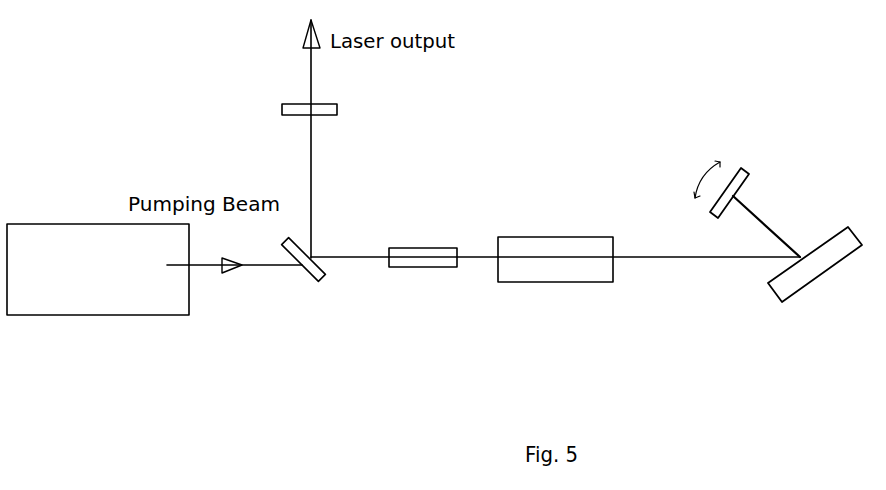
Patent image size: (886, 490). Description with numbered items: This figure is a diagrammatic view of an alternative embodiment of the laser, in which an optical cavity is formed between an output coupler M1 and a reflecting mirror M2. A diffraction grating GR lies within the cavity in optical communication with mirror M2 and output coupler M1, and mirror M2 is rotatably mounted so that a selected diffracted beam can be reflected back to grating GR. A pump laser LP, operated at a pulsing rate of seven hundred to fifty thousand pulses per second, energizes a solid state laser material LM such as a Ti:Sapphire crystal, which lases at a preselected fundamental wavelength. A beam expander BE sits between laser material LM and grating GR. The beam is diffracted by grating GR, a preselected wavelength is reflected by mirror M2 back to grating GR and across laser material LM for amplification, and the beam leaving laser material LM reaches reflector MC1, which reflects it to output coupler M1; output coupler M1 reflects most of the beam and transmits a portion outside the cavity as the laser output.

The pump laser LP is at (98, 293).
The reflector MC1 is at (306, 284).
The output coupler M1 is at (337, 116).
The solid state laser material LM is at (422, 235).
The beam expander BE is at (555, 243).
The reflecting mirror M2 is at (747, 199).
The diffraction grating GR is at (815, 267).